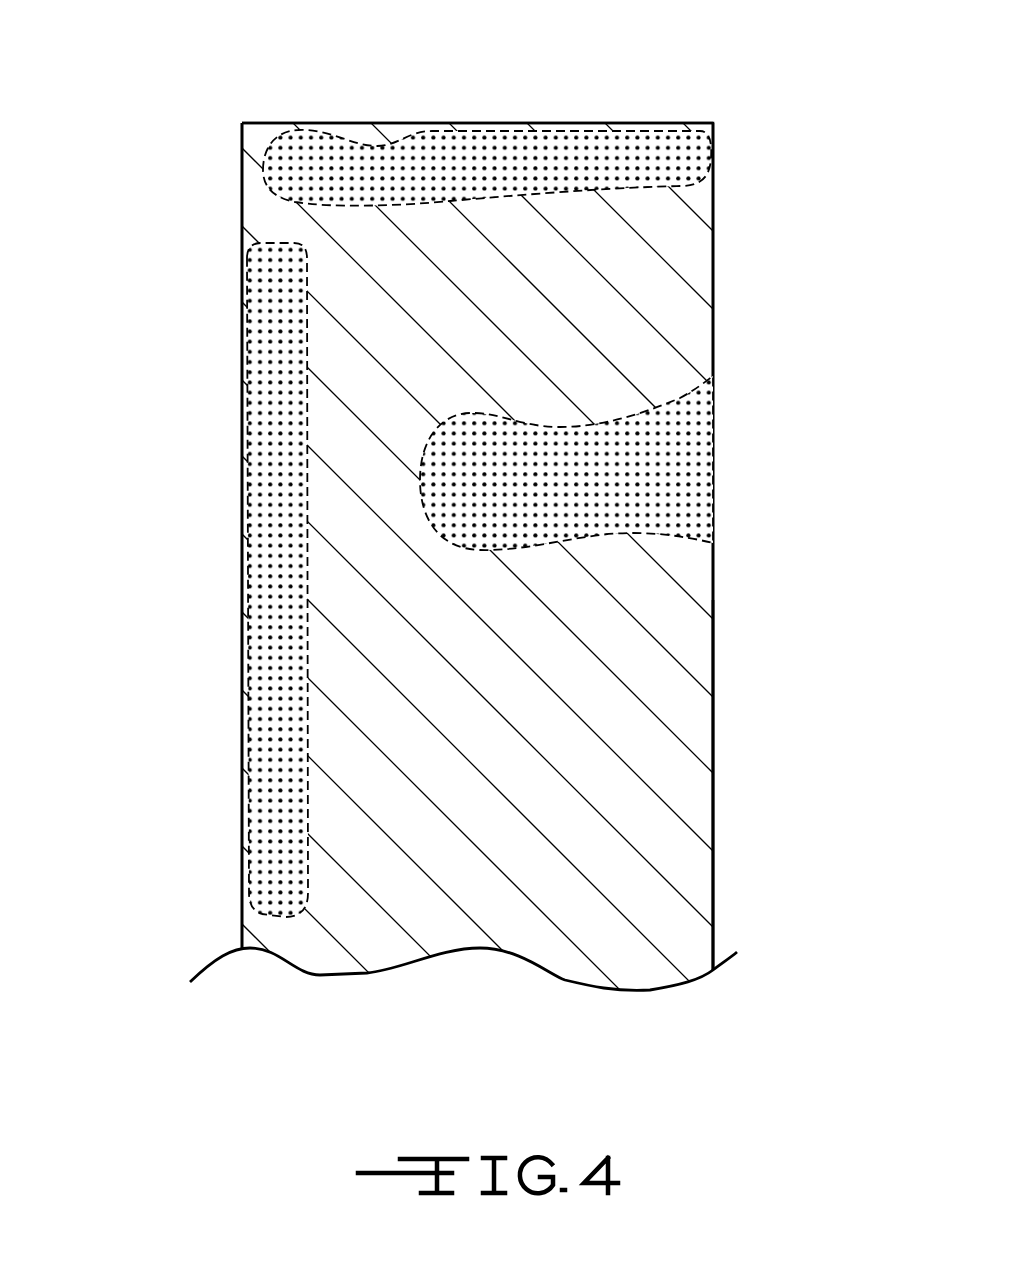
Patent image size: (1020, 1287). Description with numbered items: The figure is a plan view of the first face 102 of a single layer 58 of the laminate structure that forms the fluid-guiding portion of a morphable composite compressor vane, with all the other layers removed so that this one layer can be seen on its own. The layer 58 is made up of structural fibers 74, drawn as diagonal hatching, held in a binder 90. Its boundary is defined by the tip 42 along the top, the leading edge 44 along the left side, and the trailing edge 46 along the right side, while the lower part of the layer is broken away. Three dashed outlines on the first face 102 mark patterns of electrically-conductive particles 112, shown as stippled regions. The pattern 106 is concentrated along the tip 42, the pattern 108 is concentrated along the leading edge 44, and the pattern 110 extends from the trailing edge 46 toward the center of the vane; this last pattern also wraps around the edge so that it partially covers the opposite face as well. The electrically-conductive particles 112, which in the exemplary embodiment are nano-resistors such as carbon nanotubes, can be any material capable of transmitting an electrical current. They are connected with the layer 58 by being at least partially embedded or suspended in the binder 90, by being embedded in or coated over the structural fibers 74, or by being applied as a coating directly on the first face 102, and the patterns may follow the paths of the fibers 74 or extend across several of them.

The layer 58 is at (134, 170).
The tip 42 is at (683, 123).
The leading edge 44 is at (242, 762).
The trailing edge 46 is at (713, 897).
The structural fibers 74 is at (450, 895).
The binder 90 is at (700, 686).
The first face 102 is at (690, 813).
The pattern 106 is at (420, 130).
The pattern 108 is at (242, 345).
The pattern 110 is at (713, 378).
The electrically-conductive particles 112 is at (577, 128).